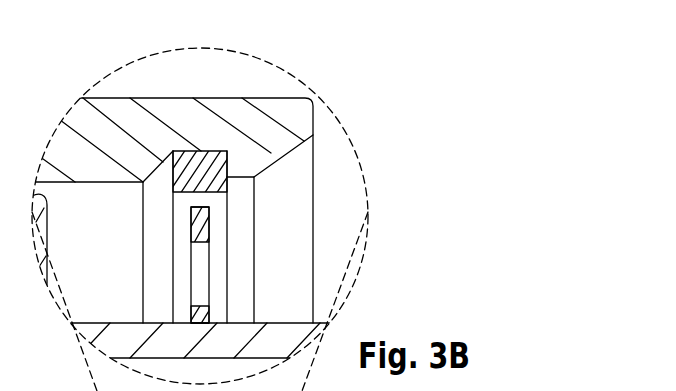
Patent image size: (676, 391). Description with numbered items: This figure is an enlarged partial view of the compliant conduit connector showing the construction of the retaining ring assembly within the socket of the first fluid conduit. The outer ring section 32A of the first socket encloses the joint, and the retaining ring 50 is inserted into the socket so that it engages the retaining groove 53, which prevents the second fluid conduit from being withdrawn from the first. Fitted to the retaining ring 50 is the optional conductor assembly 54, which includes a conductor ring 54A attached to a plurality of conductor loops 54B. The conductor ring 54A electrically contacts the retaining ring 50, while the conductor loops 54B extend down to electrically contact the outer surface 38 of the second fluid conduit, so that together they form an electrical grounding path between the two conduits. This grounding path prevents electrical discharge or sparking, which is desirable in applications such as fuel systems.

The outer ring section 32A is at (237, 118).
The retaining ring 50 is at (190, 163).
The retaining groove 53 is at (228, 160).
The conductor assembly 54 is at (193, 232).
The conductor ring 54A is at (192, 221).
The conductor loops 54B is at (210, 312).
The outer surface 38 is at (108, 323).